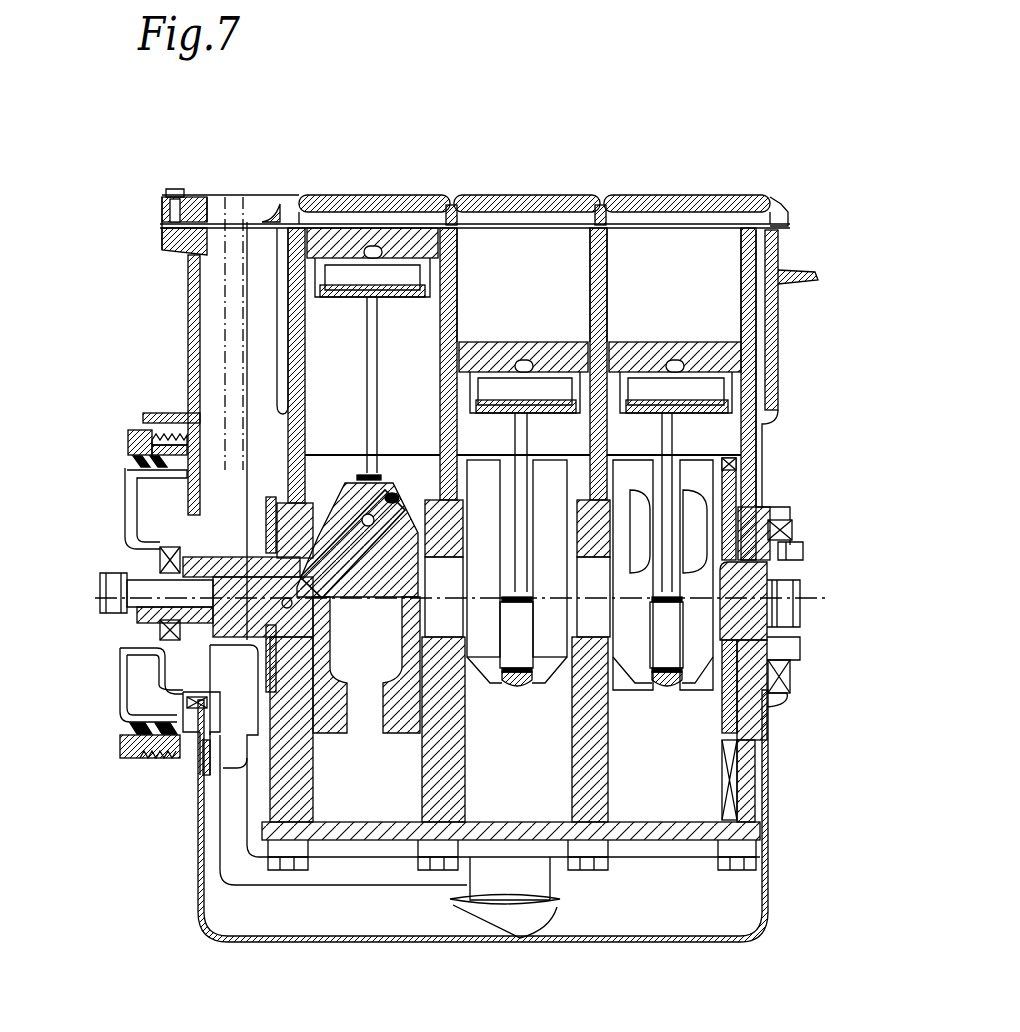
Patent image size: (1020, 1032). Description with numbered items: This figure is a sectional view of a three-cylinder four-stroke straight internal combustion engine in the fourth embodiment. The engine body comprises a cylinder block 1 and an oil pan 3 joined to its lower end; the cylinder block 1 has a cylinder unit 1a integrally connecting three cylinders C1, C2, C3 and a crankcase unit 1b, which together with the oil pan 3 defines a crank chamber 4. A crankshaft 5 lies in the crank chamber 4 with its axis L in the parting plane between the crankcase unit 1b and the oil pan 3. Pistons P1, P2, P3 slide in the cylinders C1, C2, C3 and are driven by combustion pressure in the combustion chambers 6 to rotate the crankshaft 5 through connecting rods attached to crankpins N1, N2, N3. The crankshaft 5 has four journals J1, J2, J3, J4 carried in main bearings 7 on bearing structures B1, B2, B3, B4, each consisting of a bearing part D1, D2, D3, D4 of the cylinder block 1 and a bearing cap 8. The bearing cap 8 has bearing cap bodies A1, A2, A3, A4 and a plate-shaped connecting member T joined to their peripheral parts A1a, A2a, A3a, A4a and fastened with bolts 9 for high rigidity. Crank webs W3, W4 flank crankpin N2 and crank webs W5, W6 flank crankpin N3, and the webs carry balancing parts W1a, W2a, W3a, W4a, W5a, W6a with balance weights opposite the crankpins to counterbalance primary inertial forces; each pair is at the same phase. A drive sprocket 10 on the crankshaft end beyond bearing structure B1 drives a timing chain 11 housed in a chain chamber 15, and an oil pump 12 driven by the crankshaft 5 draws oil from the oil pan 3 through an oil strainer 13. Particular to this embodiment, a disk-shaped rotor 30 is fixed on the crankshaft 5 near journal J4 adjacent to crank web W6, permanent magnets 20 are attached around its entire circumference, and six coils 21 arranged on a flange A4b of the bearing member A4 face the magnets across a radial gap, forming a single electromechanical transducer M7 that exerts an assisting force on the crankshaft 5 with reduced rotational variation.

The cylinder block 1 is at (817, 386).
The cylinder unit 1a is at (778, 337).
The crankcase unit 1b is at (745, 487).
The oil pan 3 is at (785, 212).
The crank chamber 4 is at (250, 808).
The crankshaft 5 is at (782, 556).
The combustion chamber 6 is at (401, 214).
The main bearing 7 is at (444, 656).
The bearing cap 8 is at (250, 840).
The bolt 9 is at (284, 875).
The drive sprocket 10 is at (182, 540).
The timing chain 11 is at (222, 352).
The oil pump 12 is at (235, 714).
The oil strainer 13 is at (520, 922).
The chain chamber 15 is at (204, 292).
The permanent magnet 20 is at (762, 447).
The coil 21 is at (750, 755).
The rotor 30 is at (768, 687).
The bearing cap body A1 is at (300, 783).
The bearing cap body A2 is at (448, 790).
The bearing cap body A3 is at (600, 790).
The bearing cap body A4 is at (752, 783).
The peripheral part A1a is at (290, 828).
The peripheral part A2a is at (445, 826).
The peripheral part A3a is at (596, 826).
The peripheral part A4a is at (738, 824).
The flange A4b is at (712, 830).
The bearing structure B1 is at (332, 486).
The bearing structure B2 is at (423, 473).
The bearing structure B3 is at (587, 474).
The bearing structure B4 is at (784, 500).
The cylinder C1 is at (290, 285).
The cylinder C2 is at (567, 265).
The cylinder C3 is at (728, 255).
The bearing part D1 is at (282, 500).
The bearing part D2 is at (455, 510).
The bearing part D3 is at (583, 530).
The bearing part D4 is at (768, 535).
The journal J1 is at (290, 547).
The journal J2 is at (460, 591).
The journal J3 is at (608, 591).
The journal J4 is at (750, 630).
The axis L is at (470, 602).
The electromechanical transducer M7 is at (700, 760).
The crankpin N1 is at (350, 453).
The crankpin N2 is at (536, 651).
The crankpin N3 is at (686, 658).
The piston P1 is at (430, 232).
The piston P2 is at (535, 345).
The piston P3 is at (683, 345).
The connecting member T is at (634, 834).
The balancing part W1a is at (338, 736).
The balancing part W2a is at (395, 736).
The balancing part W3a is at (489, 558).
The balancing part W4a is at (566, 503).
The balancing part W5a is at (633, 482).
The balancing part W6a is at (703, 482).
The crank web W3 is at (492, 697).
The crank web W4 is at (555, 697).
The crank web W5 is at (633, 697).
The crank web W6 is at (708, 697).